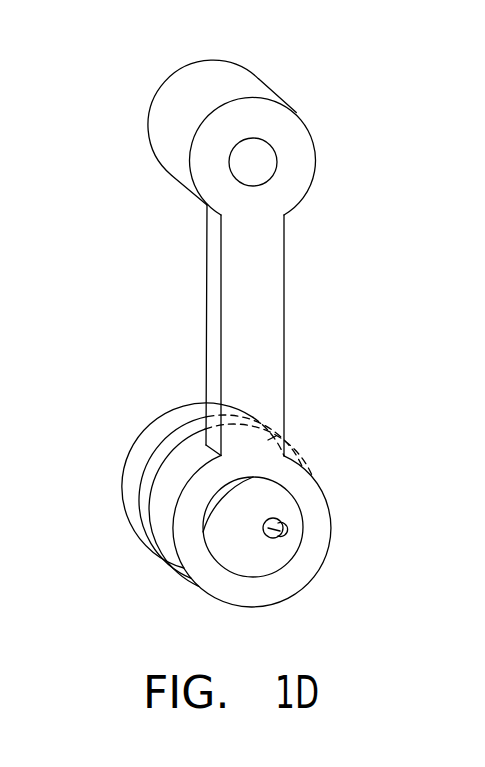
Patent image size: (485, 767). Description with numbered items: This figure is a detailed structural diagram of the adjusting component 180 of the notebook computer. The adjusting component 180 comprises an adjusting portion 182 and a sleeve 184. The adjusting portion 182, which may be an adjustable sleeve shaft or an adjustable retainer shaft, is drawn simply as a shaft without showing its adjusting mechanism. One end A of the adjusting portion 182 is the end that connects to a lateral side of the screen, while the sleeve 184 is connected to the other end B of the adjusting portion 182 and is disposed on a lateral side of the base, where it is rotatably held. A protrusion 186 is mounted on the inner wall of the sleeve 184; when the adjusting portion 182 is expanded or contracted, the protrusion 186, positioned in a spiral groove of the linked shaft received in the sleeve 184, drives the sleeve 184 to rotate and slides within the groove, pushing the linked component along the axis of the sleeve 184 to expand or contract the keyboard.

The adjusting component 180 is at (87, 43).
The adjusting portion 182 is at (285, 330).
The sleeve 184 is at (180, 562).
The protrusion 186 is at (284, 538).
The one end of the adjusting portion A is at (250, 84).
The another end of the adjusting portion B is at (272, 438).